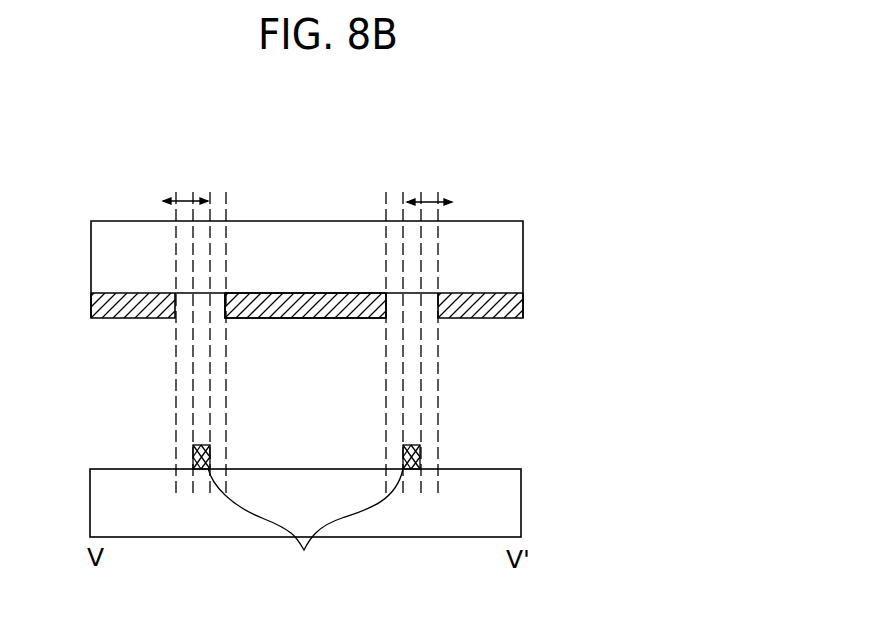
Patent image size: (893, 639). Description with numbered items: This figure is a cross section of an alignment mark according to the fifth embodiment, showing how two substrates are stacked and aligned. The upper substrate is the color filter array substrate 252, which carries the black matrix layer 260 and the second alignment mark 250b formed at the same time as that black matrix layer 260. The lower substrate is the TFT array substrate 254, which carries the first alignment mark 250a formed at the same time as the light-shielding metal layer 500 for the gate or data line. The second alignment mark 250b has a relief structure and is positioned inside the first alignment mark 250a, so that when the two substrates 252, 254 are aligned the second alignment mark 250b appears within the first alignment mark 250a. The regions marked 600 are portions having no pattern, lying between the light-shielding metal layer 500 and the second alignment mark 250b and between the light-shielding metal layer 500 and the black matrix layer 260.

The color filter array substrate 252 is at (512, 258).
The black matrix layer 260 is at (513, 307).
The second alignment mark 250b is at (310, 300).
The first alignment mark 250a is at (402, 445).
The TFT array substrate 254 is at (470, 527).
The light-shielding metal layer 500 is at (305, 529).
The portions having no pattern 600 is at (190, 200).